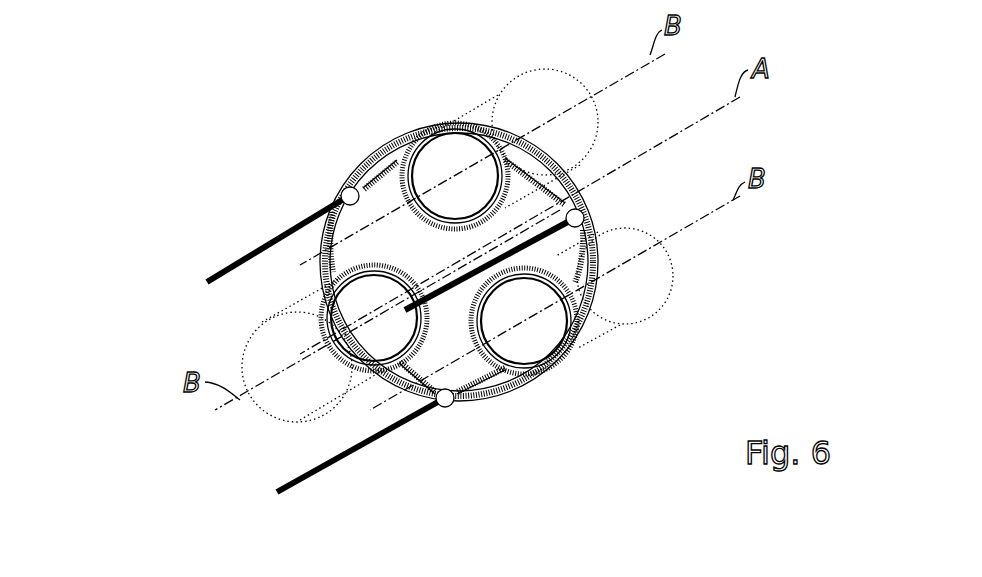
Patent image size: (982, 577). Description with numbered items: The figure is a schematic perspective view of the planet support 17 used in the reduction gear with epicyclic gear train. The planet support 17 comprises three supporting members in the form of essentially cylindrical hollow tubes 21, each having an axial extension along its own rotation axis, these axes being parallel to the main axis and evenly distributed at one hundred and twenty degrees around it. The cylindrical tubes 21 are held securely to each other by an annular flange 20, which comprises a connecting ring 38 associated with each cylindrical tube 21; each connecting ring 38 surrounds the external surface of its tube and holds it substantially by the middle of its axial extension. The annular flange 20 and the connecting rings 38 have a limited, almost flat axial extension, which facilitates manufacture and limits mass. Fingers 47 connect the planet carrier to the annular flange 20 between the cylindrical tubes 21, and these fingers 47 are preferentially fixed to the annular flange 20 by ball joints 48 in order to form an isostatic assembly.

The planet support 17 is at (205, 203).
The annular flange 20 is at (600, 258).
The cylindrical tube 21 is at (500, 97).
The connecting ring 38 is at (397, 173).
The finger 47 is at (232, 264).
The ball joint 48 is at (341, 192).